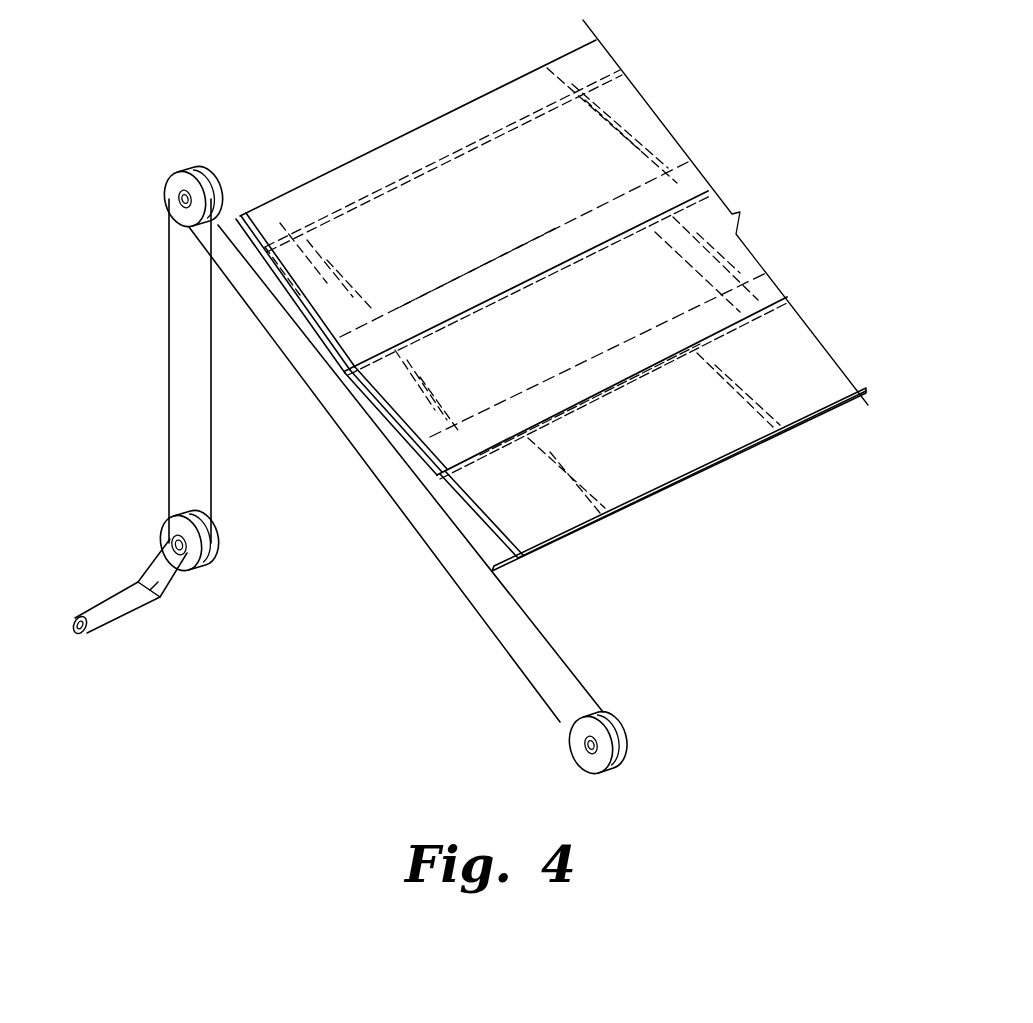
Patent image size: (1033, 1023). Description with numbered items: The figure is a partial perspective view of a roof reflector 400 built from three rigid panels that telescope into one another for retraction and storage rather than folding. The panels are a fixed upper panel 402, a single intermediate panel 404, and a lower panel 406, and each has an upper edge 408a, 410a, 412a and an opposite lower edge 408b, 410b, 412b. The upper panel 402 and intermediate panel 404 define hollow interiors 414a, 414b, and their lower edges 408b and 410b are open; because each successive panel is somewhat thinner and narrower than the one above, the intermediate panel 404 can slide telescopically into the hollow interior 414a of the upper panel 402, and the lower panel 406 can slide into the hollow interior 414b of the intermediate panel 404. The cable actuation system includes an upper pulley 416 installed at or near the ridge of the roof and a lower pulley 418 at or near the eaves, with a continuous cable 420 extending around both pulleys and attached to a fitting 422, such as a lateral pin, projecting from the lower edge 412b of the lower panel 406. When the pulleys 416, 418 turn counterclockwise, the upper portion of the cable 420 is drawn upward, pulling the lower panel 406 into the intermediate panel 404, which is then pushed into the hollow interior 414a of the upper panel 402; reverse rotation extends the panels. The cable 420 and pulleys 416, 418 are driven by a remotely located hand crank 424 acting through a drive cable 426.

The roof reflector 400 is at (238, 703).
The fixed upper panel 402 is at (637, 92).
The intermediate panel 404 is at (750, 240).
The lower panel 406 is at (822, 337).
The upper edge 408a is at (395, 138).
The lower edge 408b is at (457, 318).
The upper edge 410a is at (455, 270).
The lower edge 410b is at (577, 404).
The upper edge 412a is at (648, 322).
The lower edge 412b is at (657, 492).
The hollow interior 414a is at (530, 220).
The hollow interior 414b is at (623, 330).
The upper pulley 416 is at (188, 170).
The lower pulley 418 is at (627, 738).
The continuous cable 420 is at (437, 498).
The fitting 422 is at (503, 572).
The hand crank 424 is at (160, 523).
The drive cable 426 is at (168, 385).